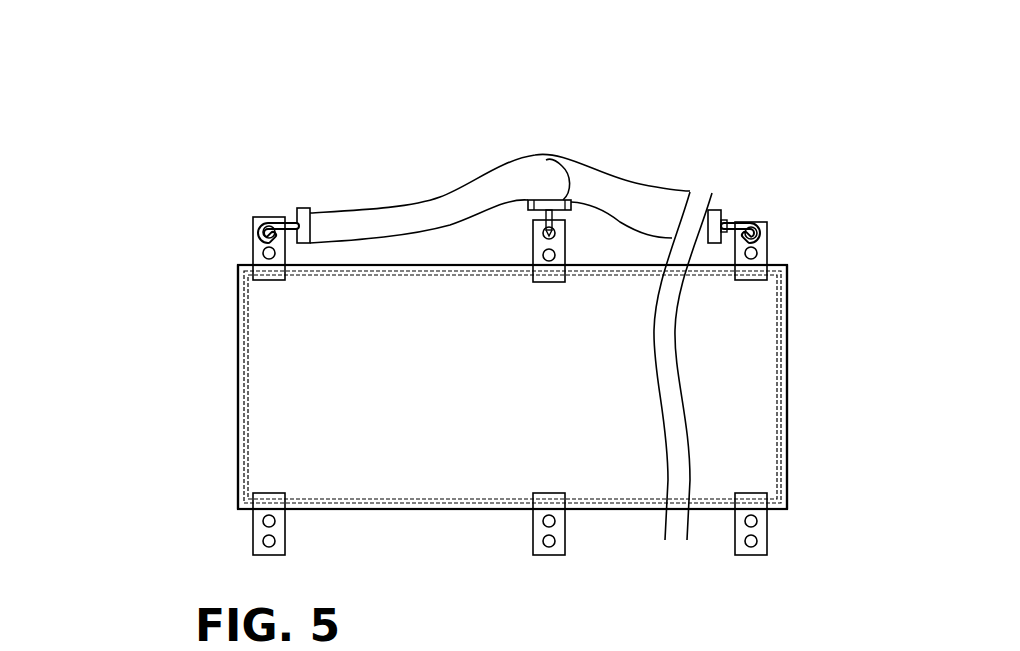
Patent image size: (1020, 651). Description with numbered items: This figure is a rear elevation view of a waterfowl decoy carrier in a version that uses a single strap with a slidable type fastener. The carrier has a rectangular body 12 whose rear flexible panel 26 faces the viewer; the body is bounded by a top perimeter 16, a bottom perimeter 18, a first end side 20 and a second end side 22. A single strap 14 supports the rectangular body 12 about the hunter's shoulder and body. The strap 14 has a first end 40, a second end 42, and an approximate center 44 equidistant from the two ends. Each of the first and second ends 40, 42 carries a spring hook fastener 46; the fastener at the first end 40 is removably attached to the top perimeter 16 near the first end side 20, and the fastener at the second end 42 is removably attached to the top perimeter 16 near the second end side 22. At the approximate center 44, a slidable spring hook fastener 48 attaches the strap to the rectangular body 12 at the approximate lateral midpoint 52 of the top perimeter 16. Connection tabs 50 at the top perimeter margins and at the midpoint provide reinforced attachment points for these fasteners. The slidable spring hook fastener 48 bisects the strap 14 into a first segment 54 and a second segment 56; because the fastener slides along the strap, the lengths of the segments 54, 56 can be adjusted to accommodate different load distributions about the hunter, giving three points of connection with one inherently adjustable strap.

The rectangular body 12 is at (237, 408).
The strap 14 is at (483, 172).
The top perimeter 16 is at (437, 265).
The bottom perimeter 18 is at (413, 510).
The first end side 20 is at (237, 328).
The second end side 22 is at (787, 372).
The rear flexible panel 26 is at (395, 352).
The first end 40 is at (292, 196).
The second end 42 is at (763, 203).
The approximate center 44 is at (550, 142).
The spring hook fastener 46 is at (256, 222).
The slidable spring hook fastener 48 is at (563, 196).
The connection tab 50 is at (253, 244).
The approximate lateral midpoint 52 is at (561, 300).
The first segment 54 is at (440, 195).
The second segment 56 is at (652, 193).